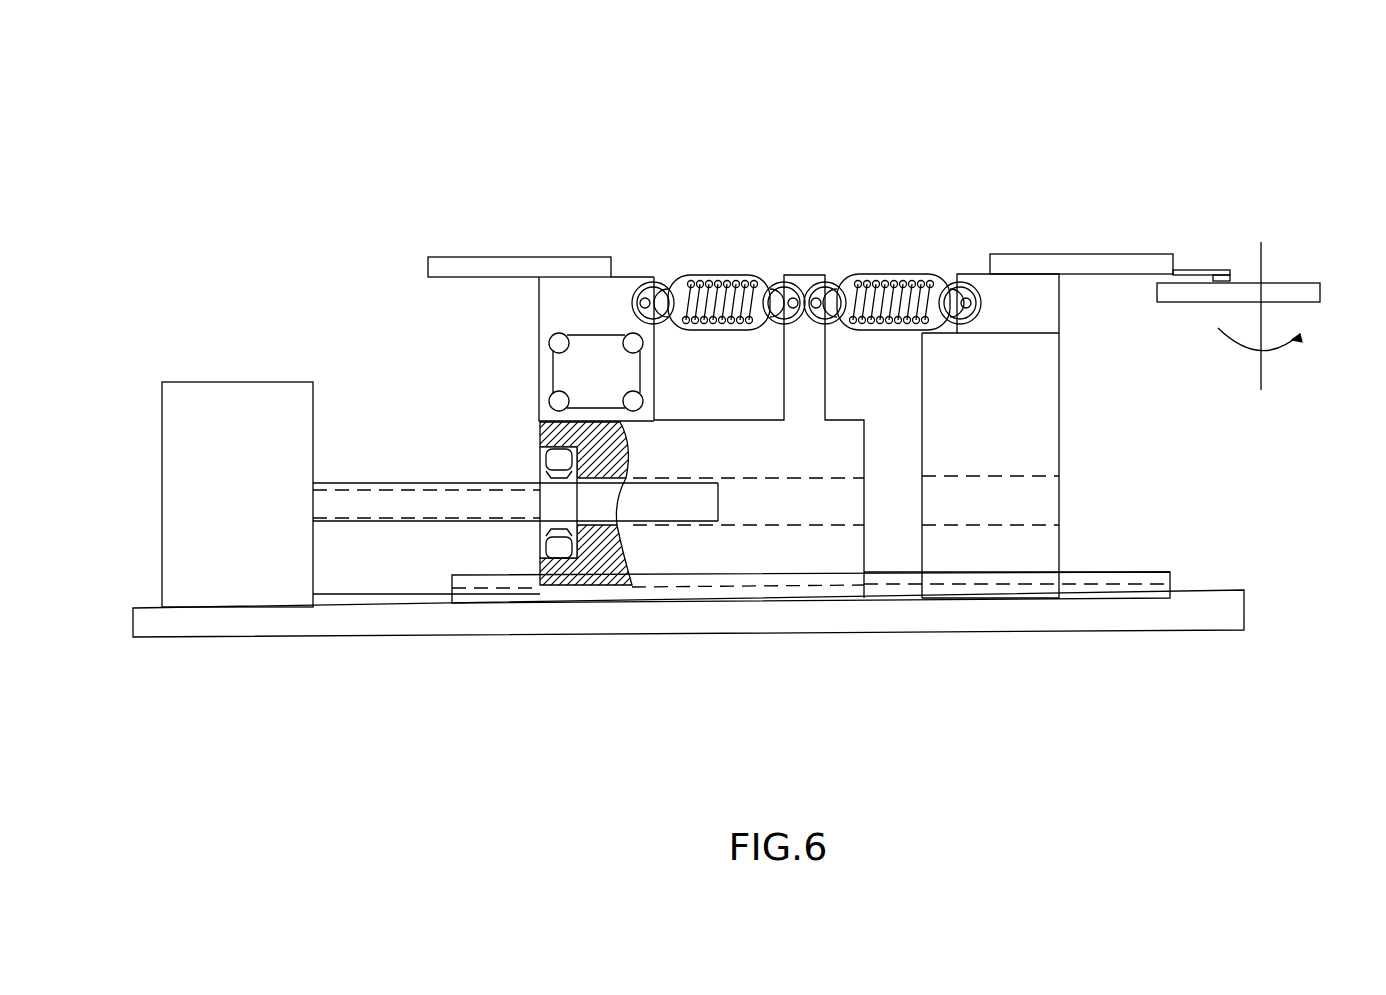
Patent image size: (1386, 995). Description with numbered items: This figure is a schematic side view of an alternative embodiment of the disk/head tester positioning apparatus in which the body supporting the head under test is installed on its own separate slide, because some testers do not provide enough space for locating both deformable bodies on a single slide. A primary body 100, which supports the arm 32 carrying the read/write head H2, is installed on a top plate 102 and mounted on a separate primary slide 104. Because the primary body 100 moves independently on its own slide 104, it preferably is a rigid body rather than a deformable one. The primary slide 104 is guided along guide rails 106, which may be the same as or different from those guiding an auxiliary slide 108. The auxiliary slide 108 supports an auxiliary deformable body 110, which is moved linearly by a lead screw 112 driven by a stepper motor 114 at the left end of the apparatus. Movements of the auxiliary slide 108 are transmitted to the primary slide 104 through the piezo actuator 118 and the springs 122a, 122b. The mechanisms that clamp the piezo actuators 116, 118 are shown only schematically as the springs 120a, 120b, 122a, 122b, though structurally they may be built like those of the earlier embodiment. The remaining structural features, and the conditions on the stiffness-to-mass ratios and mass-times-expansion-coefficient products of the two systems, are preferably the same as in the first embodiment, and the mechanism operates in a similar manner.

The primary body 100 is at (1023, 407).
The top plate 102 is at (1020, 292).
The primary slide 104 is at (1035, 558).
The guide rails 106 is at (500, 594).
The auxiliary slide 108 is at (680, 545).
The auxiliary deformable body 110 is at (590, 282).
The lead screw 112 is at (417, 512).
The stepper motor 114 is at (210, 440).
The piezo actuator 116 is at (712, 290).
The piezo actuator 118 is at (913, 324).
The spring 120a is at (712, 290).
The spring 120b is at (784, 303).
The spring 122a is at (925, 327).
The spring 122b is at (960, 303).
The arm 32 is at (1201, 293).
The read/write head H2 is at (1227, 274).